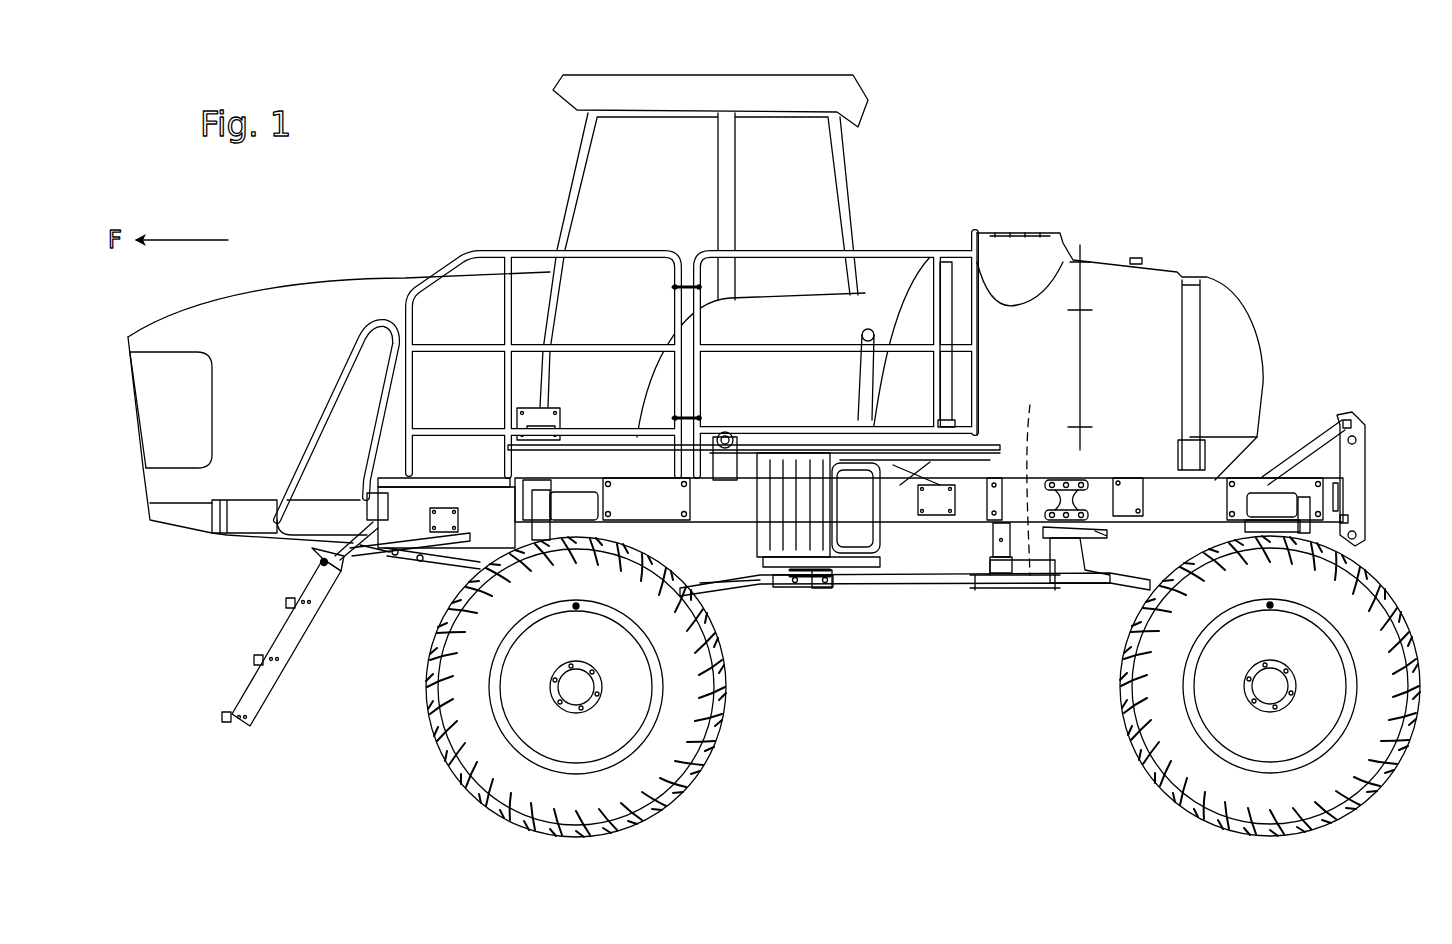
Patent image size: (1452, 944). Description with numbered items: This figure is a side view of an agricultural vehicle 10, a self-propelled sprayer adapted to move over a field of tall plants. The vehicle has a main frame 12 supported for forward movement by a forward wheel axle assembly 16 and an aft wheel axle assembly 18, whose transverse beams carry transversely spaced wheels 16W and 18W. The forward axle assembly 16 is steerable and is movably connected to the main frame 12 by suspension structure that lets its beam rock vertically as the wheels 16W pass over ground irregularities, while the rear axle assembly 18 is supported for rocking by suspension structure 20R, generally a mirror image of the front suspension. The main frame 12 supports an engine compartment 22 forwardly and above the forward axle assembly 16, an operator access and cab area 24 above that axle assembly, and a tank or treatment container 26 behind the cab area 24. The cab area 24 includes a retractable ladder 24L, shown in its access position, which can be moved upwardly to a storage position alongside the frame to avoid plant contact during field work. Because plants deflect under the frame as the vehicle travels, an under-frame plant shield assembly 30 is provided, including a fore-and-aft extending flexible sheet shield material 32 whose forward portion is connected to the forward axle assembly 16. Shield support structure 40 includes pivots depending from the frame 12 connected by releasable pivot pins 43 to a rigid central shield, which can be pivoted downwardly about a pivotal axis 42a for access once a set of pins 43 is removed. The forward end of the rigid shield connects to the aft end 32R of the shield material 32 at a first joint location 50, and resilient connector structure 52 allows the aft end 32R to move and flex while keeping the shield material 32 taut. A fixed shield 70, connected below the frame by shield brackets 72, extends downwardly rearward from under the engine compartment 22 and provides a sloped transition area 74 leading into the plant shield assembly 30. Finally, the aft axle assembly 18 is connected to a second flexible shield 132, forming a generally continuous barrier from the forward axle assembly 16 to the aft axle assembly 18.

The agricultural vehicle 10 is at (1118, 152).
The main frame 12 is at (241, 547).
The forward wheel axle assembly 16 is at (410, 702).
The wheels 16W is at (468, 777).
The aft wheel axle assembly 18 is at (1111, 707).
The wheels 18W is at (1160, 770).
The suspension structure 20R is at (1148, 558).
The engine compartment 22 is at (305, 296).
The operator access and cab area 24 is at (503, 229).
The retractable ladder 24L is at (258, 687).
The tank or treatment container 26 is at (1148, 280).
The under-frame plant shield assembly 30 is at (966, 592).
The flexible sheet shield material 32 is at (724, 594).
The aft end of the shield material 32R is at (787, 590).
The shield support structure 40 is at (985, 530).
The pivotal axis 42a is at (1024, 474).
The releasable pivot pins 43 is at (990, 565).
The first joint location 50 is at (805, 592).
The resilient or stretchable connector structure 52 is at (823, 588).
The fixed shield 70 is at (377, 558).
The shield brackets 72 is at (420, 562).
The sloped transition area 74 is at (391, 575).
The second flexible shield 132 is at (1095, 583).